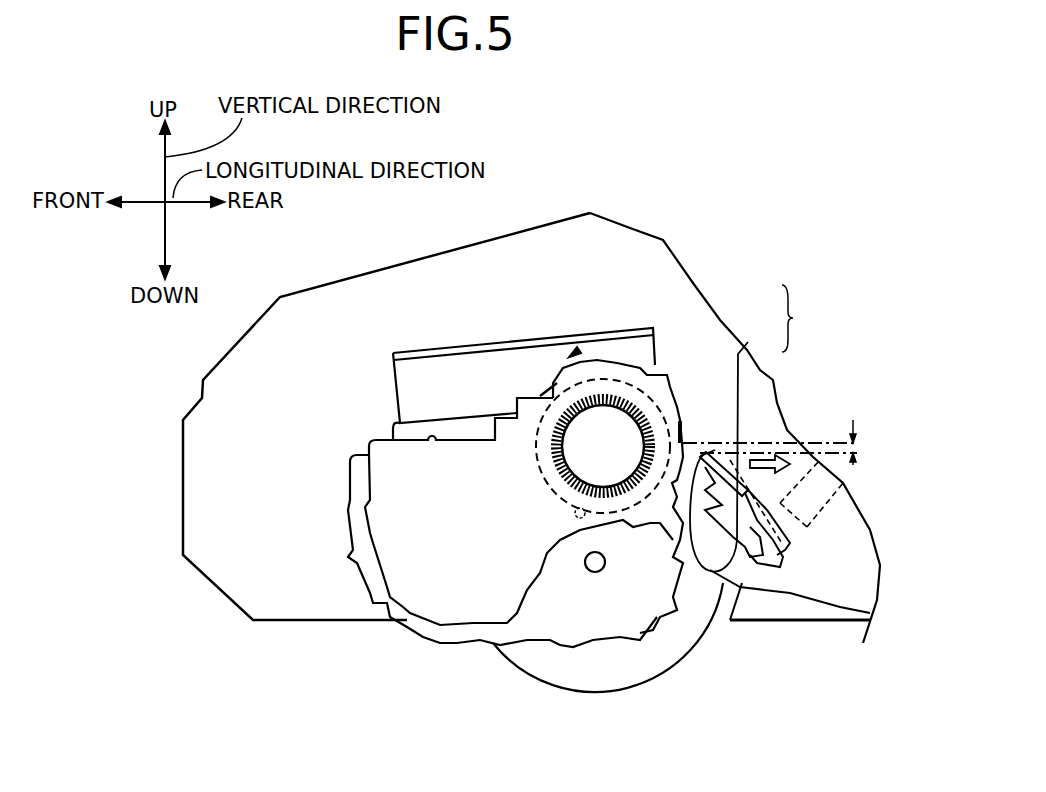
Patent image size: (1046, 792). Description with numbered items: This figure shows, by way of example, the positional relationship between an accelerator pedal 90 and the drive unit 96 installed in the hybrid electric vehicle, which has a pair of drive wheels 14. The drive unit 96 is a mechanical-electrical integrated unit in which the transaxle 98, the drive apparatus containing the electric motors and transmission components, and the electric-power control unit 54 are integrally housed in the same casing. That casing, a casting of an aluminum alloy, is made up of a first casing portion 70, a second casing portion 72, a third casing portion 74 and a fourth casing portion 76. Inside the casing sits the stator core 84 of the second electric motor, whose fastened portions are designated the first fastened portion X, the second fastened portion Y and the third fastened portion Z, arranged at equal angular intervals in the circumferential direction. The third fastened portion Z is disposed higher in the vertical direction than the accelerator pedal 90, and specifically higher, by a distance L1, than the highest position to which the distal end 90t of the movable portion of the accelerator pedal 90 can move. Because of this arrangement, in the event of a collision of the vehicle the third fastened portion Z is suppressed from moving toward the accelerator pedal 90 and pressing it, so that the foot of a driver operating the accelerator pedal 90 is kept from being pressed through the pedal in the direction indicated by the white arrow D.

The drive wheels 14 is at (547, 660).
The electric-power control unit 54 is at (572, 355).
The first casing portion 70 is at (573, 640).
The second casing portion 72 is at (393, 383).
The third casing portion 74 is at (553, 553).
The fourth casing portion 76 is at (498, 347).
The stator core 84 is at (550, 490).
The accelerator pedal 90 is at (790, 497).
The distal end 90t is at (681, 524).
The drive unit 96 is at (692, 428).
The transaxle 98 is at (729, 450).
The first fastened portion X is at (550, 392).
The second fastened portion Y is at (573, 527).
The third fastened portion Z is at (683, 433).
The white arrow D is at (765, 457).
The distance L1 is at (871, 443).